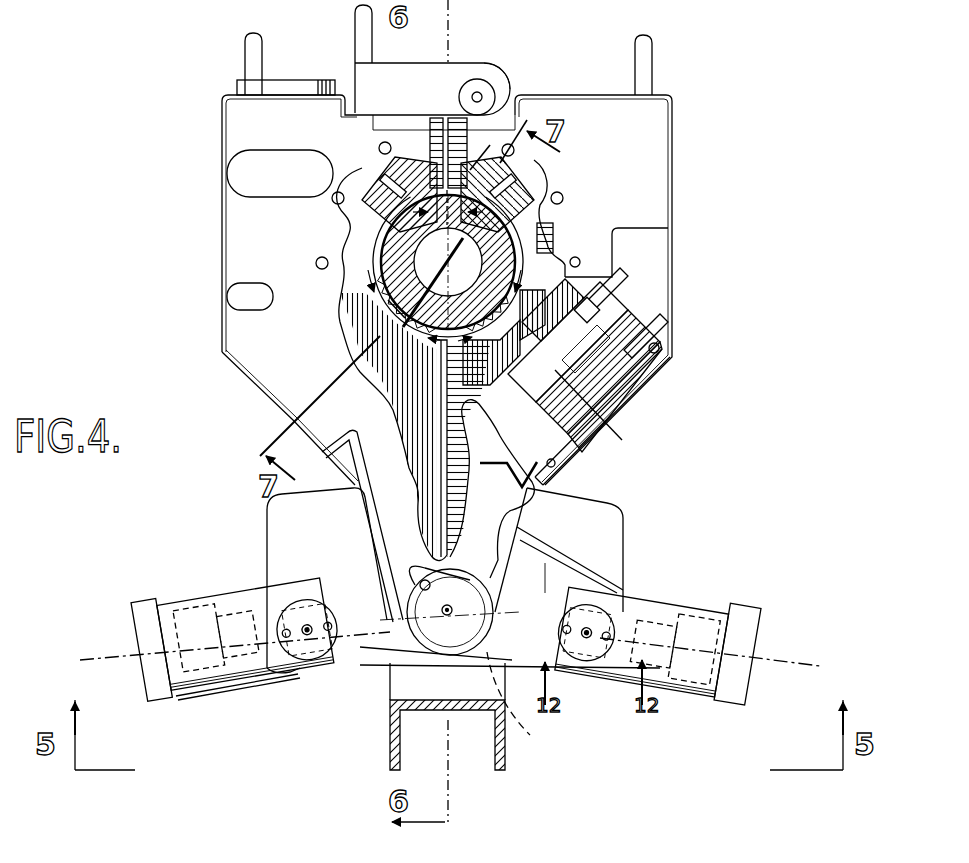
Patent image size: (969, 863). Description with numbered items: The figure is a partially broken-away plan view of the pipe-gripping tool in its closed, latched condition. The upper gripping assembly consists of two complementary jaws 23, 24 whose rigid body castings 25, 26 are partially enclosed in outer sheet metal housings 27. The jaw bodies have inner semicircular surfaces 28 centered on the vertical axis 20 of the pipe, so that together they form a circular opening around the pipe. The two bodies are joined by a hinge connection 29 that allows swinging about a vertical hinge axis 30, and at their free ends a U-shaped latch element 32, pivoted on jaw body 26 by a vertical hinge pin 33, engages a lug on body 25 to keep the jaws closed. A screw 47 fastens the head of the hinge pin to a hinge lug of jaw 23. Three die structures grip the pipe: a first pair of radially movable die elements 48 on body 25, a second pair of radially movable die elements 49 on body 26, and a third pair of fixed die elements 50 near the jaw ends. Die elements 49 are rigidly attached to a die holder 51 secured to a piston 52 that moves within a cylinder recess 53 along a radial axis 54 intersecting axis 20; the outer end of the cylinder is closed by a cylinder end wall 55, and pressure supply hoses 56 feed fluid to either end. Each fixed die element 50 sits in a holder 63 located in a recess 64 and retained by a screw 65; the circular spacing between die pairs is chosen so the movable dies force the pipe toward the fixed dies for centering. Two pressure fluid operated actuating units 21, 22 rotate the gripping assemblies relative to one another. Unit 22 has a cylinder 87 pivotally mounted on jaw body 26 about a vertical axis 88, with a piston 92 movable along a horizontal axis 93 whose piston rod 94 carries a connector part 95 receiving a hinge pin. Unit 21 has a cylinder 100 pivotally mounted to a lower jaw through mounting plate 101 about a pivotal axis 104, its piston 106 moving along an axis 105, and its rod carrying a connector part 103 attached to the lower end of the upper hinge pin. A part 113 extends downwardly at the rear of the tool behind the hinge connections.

The vertical axis of the pipe 20 is at (447, 264).
The pressure fluid operated actuating unit 21 is at (215, 705).
The pressure fluid operated actuating unit 22 is at (765, 630).
The jaw 23 is at (232, 342).
The jaw 24 is at (672, 210).
The jaw body 25 is at (440, 125).
The jaw body 26 is at (590, 275).
The outer sheet metal housing 27 is at (224, 244).
The inner cylindrically curved semicircular surface 28 is at (358, 237).
The hinge connection 29 is at (385, 665).
The vertical hinge axis 30 is at (447, 615).
The latch element 32 is at (465, 66).
The vertical hinge pin 33 is at (483, 96).
The screw 47 is at (420, 580).
The radially movable die elements 48 is at (395, 318).
The radially movable die elements 49 is at (568, 342).
The fixed die elements 50 is at (466, 168).
The die holder 51 is at (576, 349).
The piston 52 is at (632, 383).
The cylinder recess 53 is at (640, 348).
The axis 54 is at (577, 452).
The cylinder end wall 55 is at (605, 418).
The pressure supply hoses 56 is at (640, 305).
The holder 63 is at (372, 165).
The recess 64 is at (408, 152).
The screw 65 is at (515, 180).
The cylinder 87 is at (700, 615).
The vertical axis 88 is at (592, 645).
The piston 92 is at (698, 690).
The axis 93 is at (760, 668).
The piston rod 94 is at (545, 605).
The connector part 95 is at (555, 622).
The cylinder 100 is at (260, 695).
The mounting plate 101 is at (262, 520).
The connector part 103 is at (392, 680).
The pivotal axis 104 is at (310, 628).
The axis of longitudinal movement 105 is at (133, 650).
The piston 106 is at (200, 612).
The part 113 is at (505, 768).